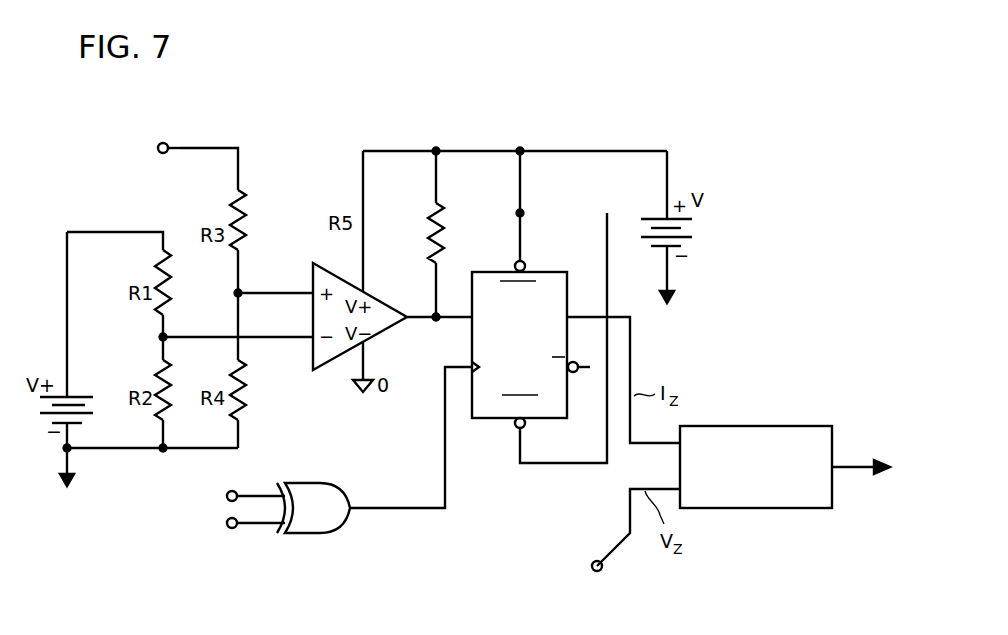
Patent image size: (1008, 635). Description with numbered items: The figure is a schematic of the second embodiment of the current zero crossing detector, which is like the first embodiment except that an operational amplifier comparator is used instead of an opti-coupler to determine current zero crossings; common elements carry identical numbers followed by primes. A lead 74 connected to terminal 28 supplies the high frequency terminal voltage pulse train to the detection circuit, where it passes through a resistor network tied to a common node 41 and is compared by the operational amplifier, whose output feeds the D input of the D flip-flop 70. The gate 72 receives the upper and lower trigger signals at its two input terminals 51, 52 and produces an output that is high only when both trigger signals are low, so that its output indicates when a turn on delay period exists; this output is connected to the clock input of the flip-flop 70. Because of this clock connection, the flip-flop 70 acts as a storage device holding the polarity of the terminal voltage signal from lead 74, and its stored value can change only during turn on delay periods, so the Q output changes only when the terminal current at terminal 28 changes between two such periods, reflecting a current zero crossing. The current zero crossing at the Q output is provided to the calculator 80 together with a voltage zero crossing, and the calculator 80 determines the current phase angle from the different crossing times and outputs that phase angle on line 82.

The terminal 28 is at (181, 148).
The lead 74 is at (213, 152).
The common node 41 is at (183, 450).
The first input terminal 51 is at (262, 492).
The second input terminal 52 is at (265, 530).
The NOR gate 72 is at (360, 485).
The D flip-flop 70 is at (498, 268).
The calculator 80 is at (746, 425).
The line 82 is at (845, 463).